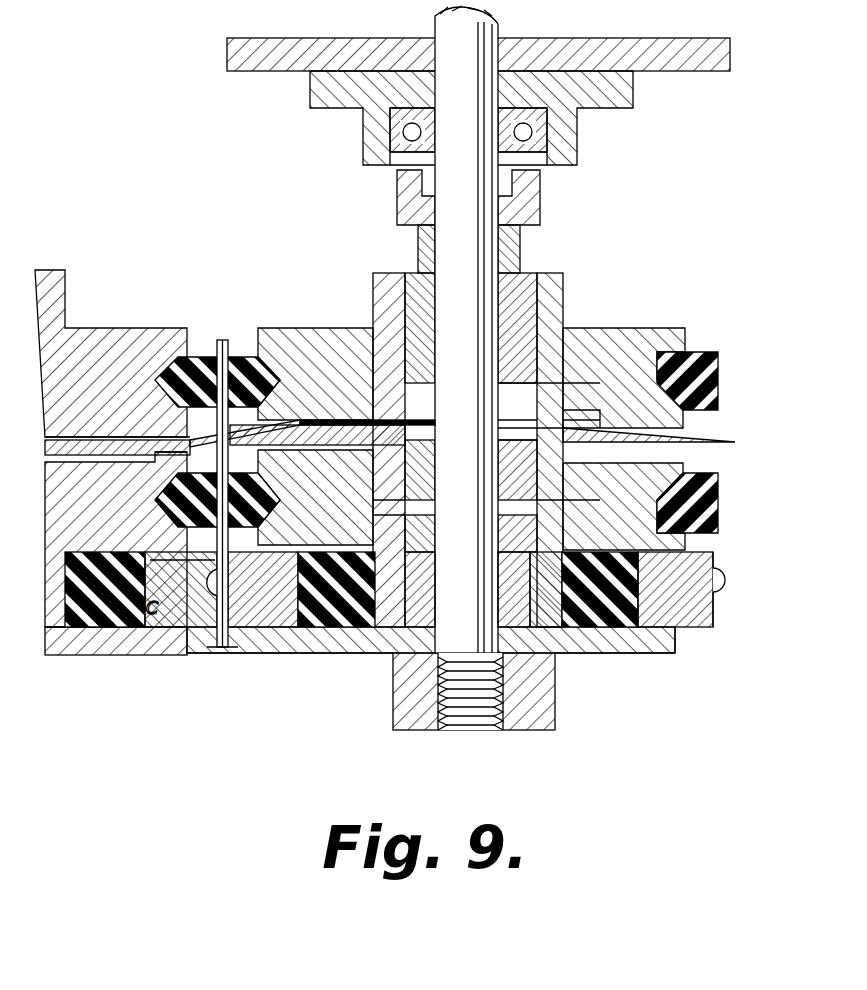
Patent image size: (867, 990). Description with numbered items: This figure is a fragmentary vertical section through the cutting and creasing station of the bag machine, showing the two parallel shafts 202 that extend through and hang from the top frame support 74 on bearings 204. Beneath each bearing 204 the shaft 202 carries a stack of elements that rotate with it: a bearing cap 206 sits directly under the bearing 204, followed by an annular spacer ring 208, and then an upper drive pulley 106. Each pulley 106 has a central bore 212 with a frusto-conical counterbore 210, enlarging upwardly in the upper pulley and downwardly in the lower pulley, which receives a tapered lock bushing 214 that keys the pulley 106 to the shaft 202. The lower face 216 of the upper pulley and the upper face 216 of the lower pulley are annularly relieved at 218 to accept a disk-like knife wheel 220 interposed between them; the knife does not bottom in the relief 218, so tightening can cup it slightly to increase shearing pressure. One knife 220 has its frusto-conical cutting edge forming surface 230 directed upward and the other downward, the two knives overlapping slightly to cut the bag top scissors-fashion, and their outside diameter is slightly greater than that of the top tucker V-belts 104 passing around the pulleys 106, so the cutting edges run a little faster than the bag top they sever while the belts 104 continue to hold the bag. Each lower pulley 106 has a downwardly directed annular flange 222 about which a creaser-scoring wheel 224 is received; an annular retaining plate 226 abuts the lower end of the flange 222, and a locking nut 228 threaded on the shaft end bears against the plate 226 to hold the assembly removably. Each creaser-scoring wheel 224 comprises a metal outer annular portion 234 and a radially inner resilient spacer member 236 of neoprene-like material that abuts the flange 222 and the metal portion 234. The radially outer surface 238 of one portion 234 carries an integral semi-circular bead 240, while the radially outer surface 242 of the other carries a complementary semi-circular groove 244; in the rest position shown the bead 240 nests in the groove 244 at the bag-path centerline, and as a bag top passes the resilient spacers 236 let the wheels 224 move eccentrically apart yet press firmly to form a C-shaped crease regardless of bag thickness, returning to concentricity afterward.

The top frame support 74 is at (699, 41).
The shaft 202 is at (447, 240).
The bearing 204 is at (546, 166).
The bearing cap 206 is at (397, 200).
The annular spacer ring 208 is at (522, 253).
The frusto-conical counterbore 210 is at (545, 276).
The central bore 212 is at (617, 400).
The tapered lock bushing 214 is at (566, 294).
The face 216 is at (746, 415).
The annular relief 218 is at (112, 463).
The knife wheel 220 is at (570, 477).
The annular flange 222 is at (502, 598).
The creaser-scoring wheel 224 is at (380, 545).
The annular retaining plate 226 is at (331, 654).
The locking nut 228 is at (393, 705).
The cutting edge forming surface 230 is at (757, 440).
The outer annular portion 234 is at (207, 630).
The resilient spacer member 236 is at (148, 585).
The radially outer surface 238 is at (714, 610).
The bead 240 is at (236, 585).
The radially outer surface 242 is at (228, 613).
The groove 244 is at (182, 562).
The top tucker V-belt 104 is at (165, 376).
The drive pulley 106 is at (96, 334).